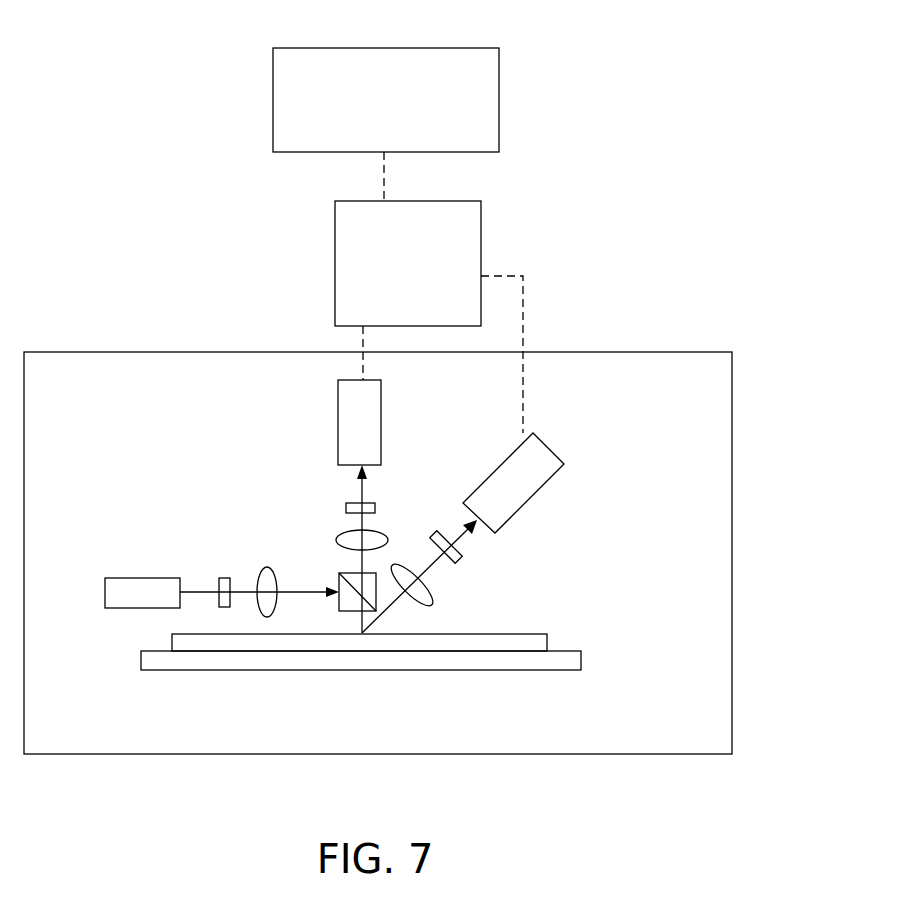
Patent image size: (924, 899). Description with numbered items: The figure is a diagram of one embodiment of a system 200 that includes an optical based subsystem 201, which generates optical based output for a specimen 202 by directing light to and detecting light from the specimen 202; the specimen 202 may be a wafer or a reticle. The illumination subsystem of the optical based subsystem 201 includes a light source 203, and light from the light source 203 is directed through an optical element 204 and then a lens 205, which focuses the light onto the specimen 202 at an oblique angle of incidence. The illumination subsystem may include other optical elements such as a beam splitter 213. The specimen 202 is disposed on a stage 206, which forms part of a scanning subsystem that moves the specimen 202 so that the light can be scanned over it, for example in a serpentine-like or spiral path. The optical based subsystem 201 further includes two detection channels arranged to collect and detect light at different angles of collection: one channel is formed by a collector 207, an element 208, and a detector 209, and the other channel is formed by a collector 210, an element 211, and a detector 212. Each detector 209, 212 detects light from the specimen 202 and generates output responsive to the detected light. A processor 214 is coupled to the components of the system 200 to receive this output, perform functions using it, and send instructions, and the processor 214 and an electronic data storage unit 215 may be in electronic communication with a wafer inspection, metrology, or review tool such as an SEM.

The system 200 is at (161, 115).
The optical based subsystem 201 is at (733, 373).
The specimen 202 is at (173, 634).
The light source 203 is at (105, 578).
The optical element 204 is at (226, 578).
The lens 205 is at (262, 572).
The stage 206 is at (141, 666).
The collector 207 is at (340, 537).
The element 208 is at (346, 505).
The detector 209 is at (338, 423).
The collector 210 is at (435, 603).
The element 211 is at (458, 561).
The detector 212 is at (545, 482).
The beam splitter 213 is at (350, 573).
The processor 214 is at (408, 263).
The electronic data storage unit 215 is at (386, 100).